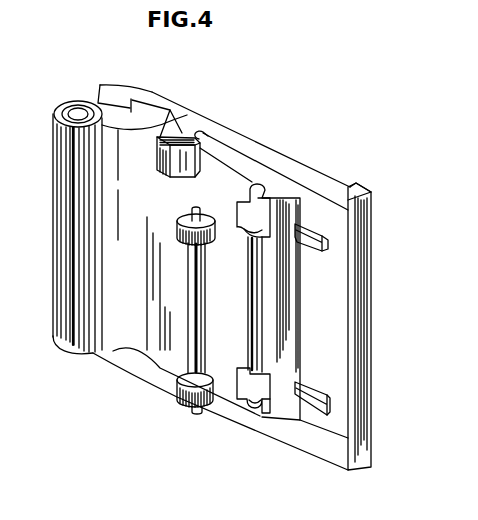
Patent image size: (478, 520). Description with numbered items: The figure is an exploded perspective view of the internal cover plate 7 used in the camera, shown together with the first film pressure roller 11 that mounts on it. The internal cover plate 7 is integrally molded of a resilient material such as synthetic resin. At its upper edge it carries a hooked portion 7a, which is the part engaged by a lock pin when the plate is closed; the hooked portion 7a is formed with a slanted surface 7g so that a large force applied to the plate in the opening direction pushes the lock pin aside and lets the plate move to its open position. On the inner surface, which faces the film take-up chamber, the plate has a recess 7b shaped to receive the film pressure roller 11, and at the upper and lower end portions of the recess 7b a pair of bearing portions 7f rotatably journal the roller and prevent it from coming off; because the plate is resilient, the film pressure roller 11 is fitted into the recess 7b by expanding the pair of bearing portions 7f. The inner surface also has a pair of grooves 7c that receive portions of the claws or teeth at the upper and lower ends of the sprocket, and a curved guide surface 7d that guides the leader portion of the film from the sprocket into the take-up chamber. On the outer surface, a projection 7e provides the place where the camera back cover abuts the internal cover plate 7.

The internal cover plate 7 is at (278, 143).
The hooked portion 7a is at (181, 141).
The recess 7b is at (248, 337).
The grooves 7c is at (322, 248).
The curved guide surface 7d is at (131, 288).
The projection 7e is at (362, 187).
The bearing portions 7f is at (264, 190).
The slanted surface 7g is at (206, 132).
The first film pressure roller 11 is at (197, 343).